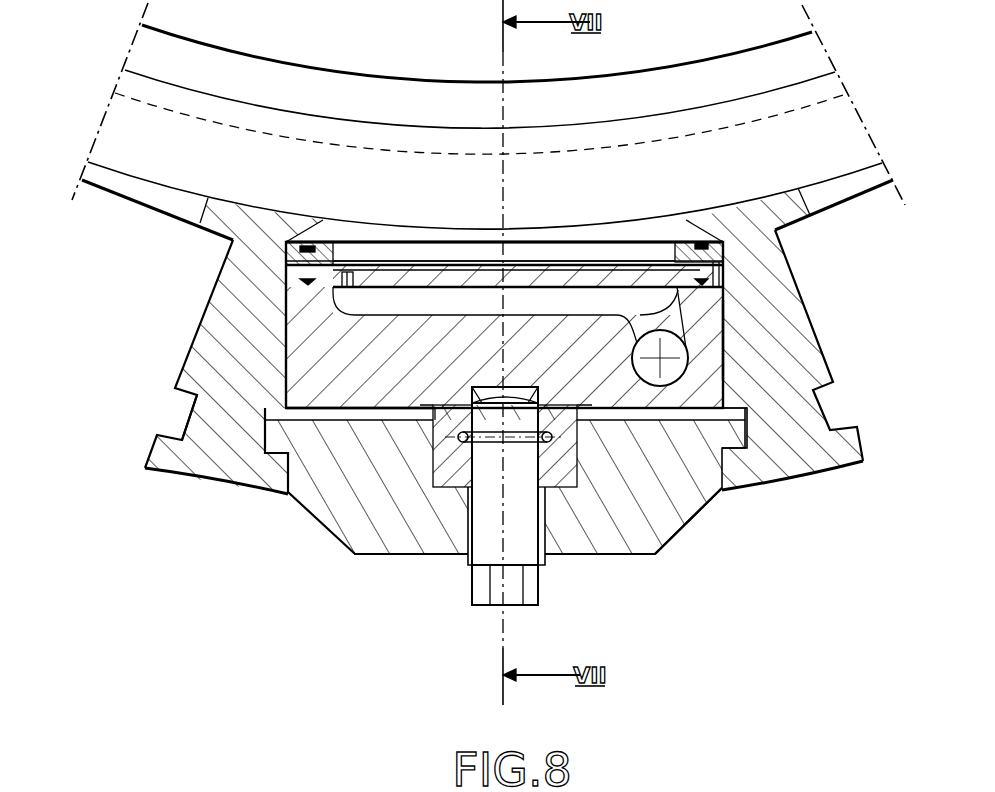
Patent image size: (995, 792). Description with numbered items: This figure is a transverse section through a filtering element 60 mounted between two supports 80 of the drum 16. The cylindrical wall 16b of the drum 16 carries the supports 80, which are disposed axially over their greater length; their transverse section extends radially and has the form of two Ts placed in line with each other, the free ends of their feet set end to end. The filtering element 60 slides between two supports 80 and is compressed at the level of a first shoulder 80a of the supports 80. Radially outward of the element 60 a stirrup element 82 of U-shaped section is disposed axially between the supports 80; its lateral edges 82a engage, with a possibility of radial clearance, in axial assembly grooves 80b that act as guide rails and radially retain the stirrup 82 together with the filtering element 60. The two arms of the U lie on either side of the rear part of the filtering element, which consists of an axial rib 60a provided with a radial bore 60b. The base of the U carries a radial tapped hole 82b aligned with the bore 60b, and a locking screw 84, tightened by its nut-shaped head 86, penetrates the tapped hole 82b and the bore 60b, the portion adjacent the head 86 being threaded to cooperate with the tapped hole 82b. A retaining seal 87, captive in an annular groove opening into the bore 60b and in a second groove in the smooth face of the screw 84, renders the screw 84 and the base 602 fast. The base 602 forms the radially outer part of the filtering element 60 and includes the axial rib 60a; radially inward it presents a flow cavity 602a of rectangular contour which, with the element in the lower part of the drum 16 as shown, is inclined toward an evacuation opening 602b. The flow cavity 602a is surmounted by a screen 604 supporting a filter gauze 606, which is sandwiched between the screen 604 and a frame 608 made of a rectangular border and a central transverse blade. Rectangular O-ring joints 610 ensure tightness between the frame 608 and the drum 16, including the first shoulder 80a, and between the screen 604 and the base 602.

The drum 16 is at (319, 171).
The cylindrical wall of revolution 16b is at (107, 209).
The filtering element 60 is at (640, 178).
The axial rib 60a is at (437, 482).
The radial bore 60b is at (585, 462).
The supports 80 is at (178, 354).
The first shoulder 80a is at (340, 243).
The axial assembly groove 80b is at (190, 422).
The stirrup element 82 is at (316, 536).
The lateral edges 82a is at (740, 455).
The radial tapped hole 82b is at (482, 548).
The locking screw 84 is at (533, 533).
The nut-shaped head 86 is at (537, 590).
The retaining seal 87 is at (450, 430).
The base 602 is at (284, 334).
The flow cavity 602a is at (418, 298).
The evacuation opening 602b is at (727, 335).
The screen 604 is at (525, 262).
The filter gauze 606 is at (592, 266).
The frame 608 is at (702, 246).
The O-ring joints 610 is at (722, 262).